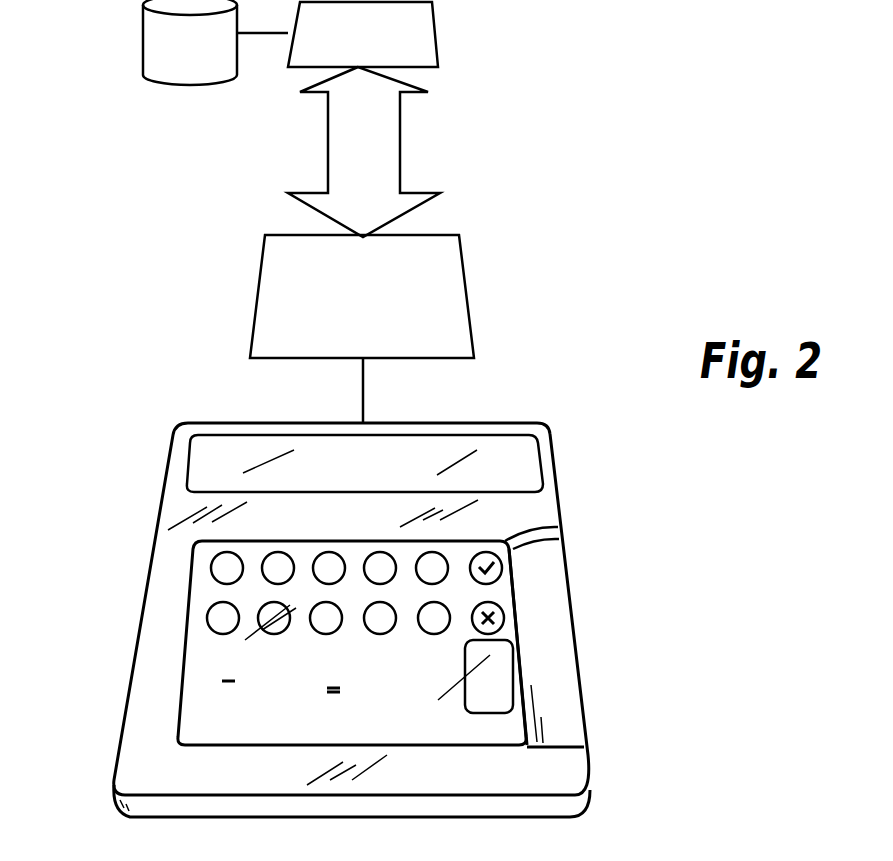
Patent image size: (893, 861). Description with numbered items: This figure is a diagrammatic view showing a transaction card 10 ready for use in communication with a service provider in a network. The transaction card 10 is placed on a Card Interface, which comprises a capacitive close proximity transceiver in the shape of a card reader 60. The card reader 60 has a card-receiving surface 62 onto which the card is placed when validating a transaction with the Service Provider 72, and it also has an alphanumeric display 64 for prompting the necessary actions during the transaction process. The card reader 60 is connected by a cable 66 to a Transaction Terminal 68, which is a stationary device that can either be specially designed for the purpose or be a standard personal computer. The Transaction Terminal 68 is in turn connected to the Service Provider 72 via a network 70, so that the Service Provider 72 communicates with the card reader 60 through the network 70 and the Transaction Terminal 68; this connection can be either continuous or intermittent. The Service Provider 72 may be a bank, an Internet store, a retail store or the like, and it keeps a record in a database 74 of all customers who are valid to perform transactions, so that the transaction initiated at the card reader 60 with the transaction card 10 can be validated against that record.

The transaction card 10 is at (198, 690).
The card reader 60 is at (112, 534).
The card-receiving surface 62 is at (527, 655).
The alphanumeric display 64 is at (190, 463).
The cable 66 is at (365, 385).
The transaction terminal 68 is at (465, 280).
The network 70 is at (400, 137).
The service provider 72 is at (438, 33).
The database 74 is at (142, 28).